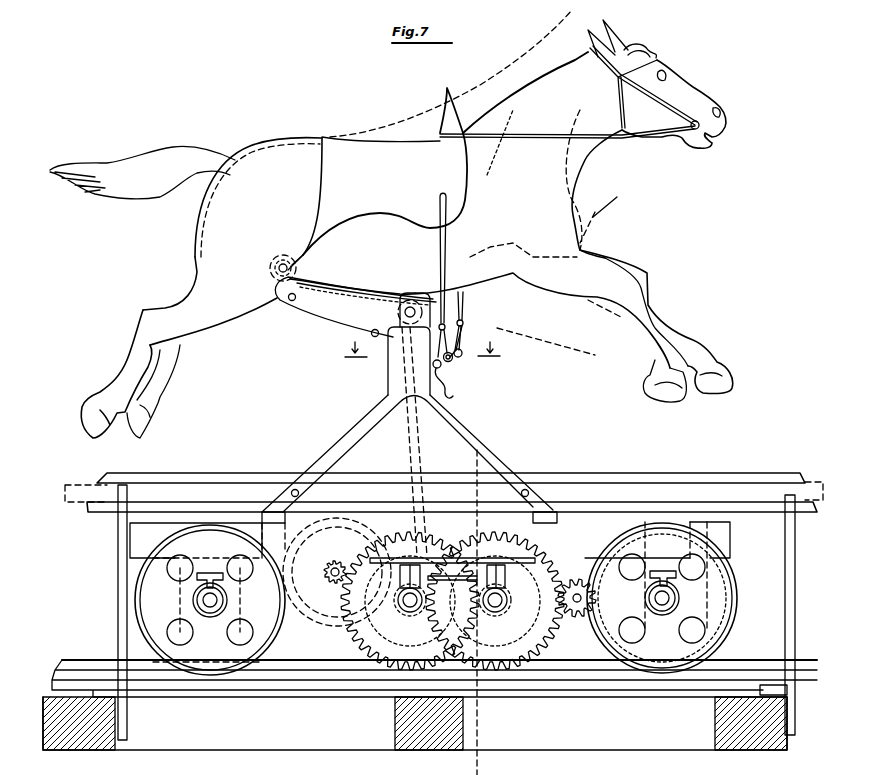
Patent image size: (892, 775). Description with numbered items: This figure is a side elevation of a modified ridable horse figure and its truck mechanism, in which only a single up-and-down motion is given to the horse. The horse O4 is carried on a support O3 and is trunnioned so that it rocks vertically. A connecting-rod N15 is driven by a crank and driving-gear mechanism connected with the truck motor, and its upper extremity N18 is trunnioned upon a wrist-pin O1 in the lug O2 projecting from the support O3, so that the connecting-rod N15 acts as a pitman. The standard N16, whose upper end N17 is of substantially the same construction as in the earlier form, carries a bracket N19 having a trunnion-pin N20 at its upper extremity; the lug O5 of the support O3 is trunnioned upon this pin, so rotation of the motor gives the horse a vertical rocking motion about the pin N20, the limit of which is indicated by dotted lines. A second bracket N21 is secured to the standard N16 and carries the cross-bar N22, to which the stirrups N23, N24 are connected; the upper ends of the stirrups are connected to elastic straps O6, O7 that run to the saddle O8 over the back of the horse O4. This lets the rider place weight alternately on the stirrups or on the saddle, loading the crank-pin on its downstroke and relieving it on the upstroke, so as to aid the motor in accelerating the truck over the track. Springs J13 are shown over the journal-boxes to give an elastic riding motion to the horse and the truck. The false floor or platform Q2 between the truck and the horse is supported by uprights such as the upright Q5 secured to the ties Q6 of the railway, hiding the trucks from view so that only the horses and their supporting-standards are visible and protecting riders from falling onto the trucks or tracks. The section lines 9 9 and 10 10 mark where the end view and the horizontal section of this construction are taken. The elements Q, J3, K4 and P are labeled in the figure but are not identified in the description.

The wrist-pin O1 is at (424, 298).
The lug O2 is at (402, 298).
The support O3 is at (342, 290).
The horse O4 is at (391, 224).
The lug O5 is at (307, 272).
The elastic strap O6 is at (462, 300).
The elastic strap O7 is at (447, 262).
The saddle O8 is at (379, 176).
The connecting-rod N15 is at (420, 452).
The standard N16 is at (343, 443).
The upper end N17 is at (390, 375).
The upper extremity N18 is at (397, 318).
The bracket N19 is at (307, 312).
The trunnion-pin N20 is at (276, 268).
The bracket N21 is at (450, 395).
The cross-bar N22 is at (462, 362).
The stirrup N23 is at (462, 323).
The stirrup N24 is at (460, 344).
The plate Q is at (452, 500).
The false floor or platform Q2 is at (212, 473).
The upright Q5 is at (121, 574).
The tie Q6 is at (65, 743).
The frame J3 is at (430, 592).
The spring J13 is at (750, 592).
The pinion K4 is at (468, 601).
The pinion shaft P is at (306, 616).
The line 9 9 is at (469, 612).
The line 10 10 is at (422, 347).